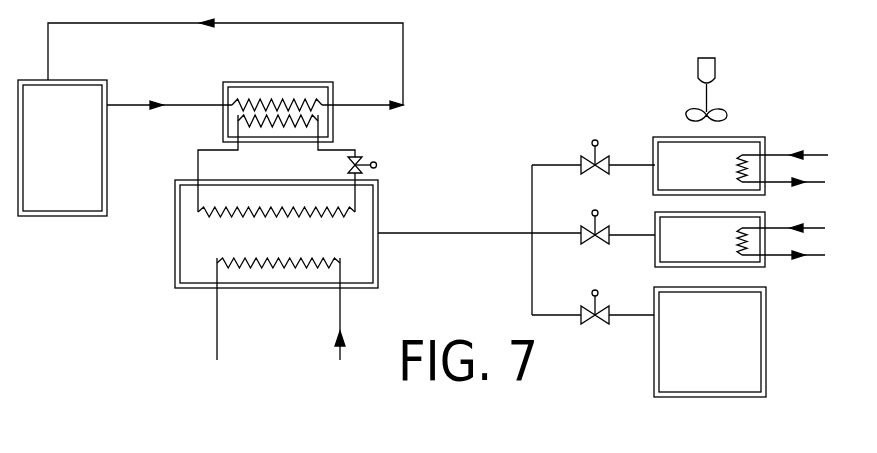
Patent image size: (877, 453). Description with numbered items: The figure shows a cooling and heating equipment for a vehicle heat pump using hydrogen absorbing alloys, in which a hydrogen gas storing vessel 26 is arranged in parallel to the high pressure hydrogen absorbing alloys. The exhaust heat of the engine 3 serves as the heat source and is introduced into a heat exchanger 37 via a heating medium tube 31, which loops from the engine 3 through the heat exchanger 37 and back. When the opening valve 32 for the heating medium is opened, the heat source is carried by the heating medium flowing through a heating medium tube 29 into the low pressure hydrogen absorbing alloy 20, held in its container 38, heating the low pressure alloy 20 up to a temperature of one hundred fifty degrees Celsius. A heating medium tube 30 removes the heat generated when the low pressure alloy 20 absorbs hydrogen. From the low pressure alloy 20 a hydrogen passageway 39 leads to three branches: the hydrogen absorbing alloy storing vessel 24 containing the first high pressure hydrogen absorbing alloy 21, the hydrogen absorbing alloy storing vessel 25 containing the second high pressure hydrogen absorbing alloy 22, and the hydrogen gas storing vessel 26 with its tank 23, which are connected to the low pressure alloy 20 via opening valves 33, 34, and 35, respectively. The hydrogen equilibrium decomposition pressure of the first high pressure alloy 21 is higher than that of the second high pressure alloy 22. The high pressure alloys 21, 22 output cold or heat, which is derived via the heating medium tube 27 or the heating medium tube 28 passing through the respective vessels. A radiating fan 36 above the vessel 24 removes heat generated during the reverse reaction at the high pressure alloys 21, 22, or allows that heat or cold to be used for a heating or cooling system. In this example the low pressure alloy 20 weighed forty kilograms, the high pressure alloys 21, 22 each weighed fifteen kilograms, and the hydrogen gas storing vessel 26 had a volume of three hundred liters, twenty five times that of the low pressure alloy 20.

The engine 3 is at (67, 95).
The heating medium tube 31 is at (187, 102).
The heat exchanger 37 is at (278, 93).
The heating medium tube 29 is at (196, 152).
The opening valve 32 is at (357, 157).
The low pressure hydrogen absorbing alloy MH1 20 is at (252, 265).
The metal hydride container 38 is at (190, 292).
The heating medium tube 30 is at (283, 324).
The hydrogen line 39 is at (468, 236).
The opening valve 33 is at (582, 160).
The opening valve 34 is at (592, 226).
The opening valve 35 is at (592, 306).
The hydrogen absorbing alloy storing vessel 24 is at (665, 136).
The high pressure hydrogen absorbing alloy MH2a 21 is at (693, 141).
The radiating fan 36 is at (716, 66).
The heating medium tube 27 is at (802, 163).
The hydrogen absorbing alloy storing vessel 25 is at (658, 216).
The high pressure hydrogen absorbing alloy MH2b 22 is at (714, 228).
The heating medium tube 28 is at (801, 238).
The hydrogen tank 23 is at (678, 369).
The hydrogen gas storing vessel 26 is at (717, 397).